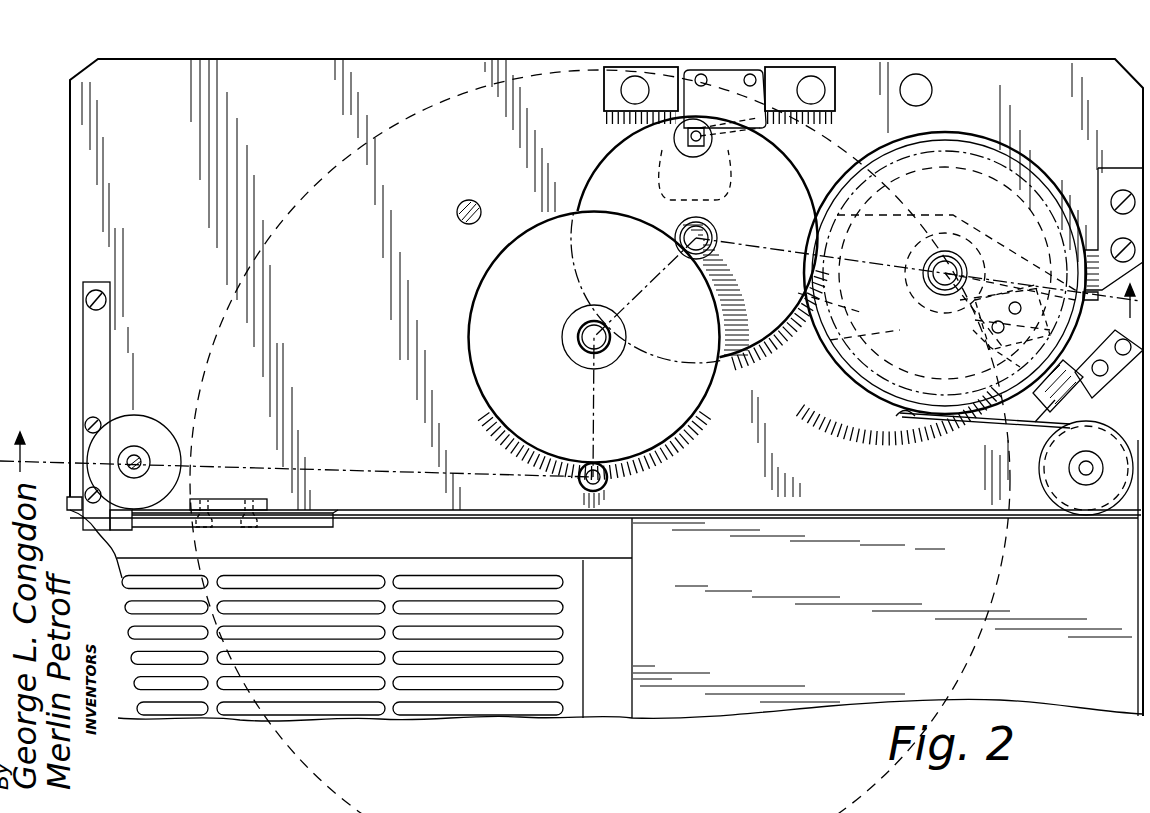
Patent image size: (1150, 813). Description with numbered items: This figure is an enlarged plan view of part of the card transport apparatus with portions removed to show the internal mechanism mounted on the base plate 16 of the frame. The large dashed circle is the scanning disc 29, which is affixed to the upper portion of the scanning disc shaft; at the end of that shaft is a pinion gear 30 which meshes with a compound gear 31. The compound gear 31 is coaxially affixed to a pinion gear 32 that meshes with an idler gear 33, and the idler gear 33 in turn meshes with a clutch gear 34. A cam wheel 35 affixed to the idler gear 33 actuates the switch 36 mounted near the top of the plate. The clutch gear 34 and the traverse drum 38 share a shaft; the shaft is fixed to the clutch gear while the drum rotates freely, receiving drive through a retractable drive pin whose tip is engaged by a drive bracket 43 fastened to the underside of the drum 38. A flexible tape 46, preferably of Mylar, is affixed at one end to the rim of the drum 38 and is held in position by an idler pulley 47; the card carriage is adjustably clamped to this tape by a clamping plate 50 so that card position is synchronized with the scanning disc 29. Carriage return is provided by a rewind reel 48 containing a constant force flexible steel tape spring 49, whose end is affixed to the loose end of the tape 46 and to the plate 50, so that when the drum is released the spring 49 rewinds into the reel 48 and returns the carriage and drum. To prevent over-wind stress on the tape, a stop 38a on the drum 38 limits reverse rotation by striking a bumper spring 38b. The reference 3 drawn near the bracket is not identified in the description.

The base plate 16 is at (85, 206).
The scanning disc 29 is at (318, 175).
The pinion gear 30 is at (609, 481).
The compound gear 31 is at (736, 420).
The pinion gear 32 is at (602, 356).
The idler gear 33 is at (745, 325).
The clutch gear 34 is at (934, 150).
The cam wheel 35 is at (718, 182).
The switch 36 is at (752, 78).
The traverse drum 38 is at (1010, 158).
The stop 38a is at (992, 428).
The bumper spring 38b is at (1088, 392).
The pin 3 is at (1097, 317).
The drive bracket 43 is at (985, 346).
The flexible tape 46 is at (978, 508).
The idler pulley 47 is at (1090, 495).
The rewind reel 48 is at (146, 418).
The flexible steel tape spring 49 is at (172, 518).
The clamping plate 50 is at (247, 505).